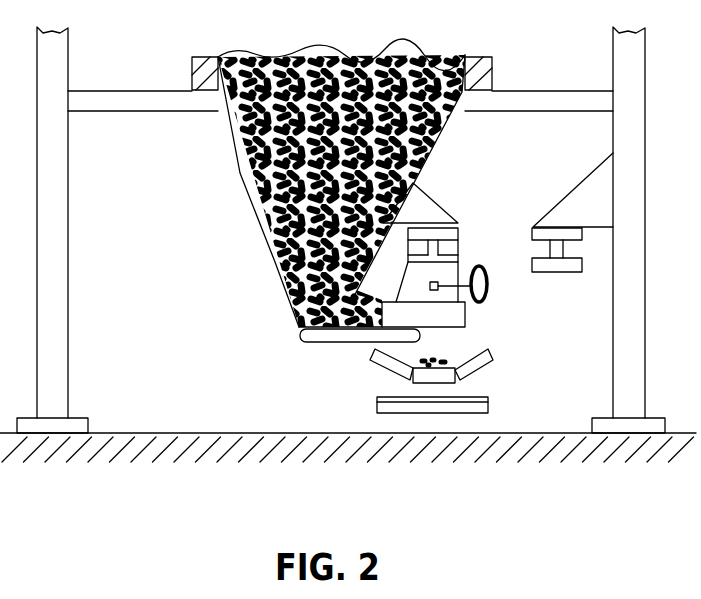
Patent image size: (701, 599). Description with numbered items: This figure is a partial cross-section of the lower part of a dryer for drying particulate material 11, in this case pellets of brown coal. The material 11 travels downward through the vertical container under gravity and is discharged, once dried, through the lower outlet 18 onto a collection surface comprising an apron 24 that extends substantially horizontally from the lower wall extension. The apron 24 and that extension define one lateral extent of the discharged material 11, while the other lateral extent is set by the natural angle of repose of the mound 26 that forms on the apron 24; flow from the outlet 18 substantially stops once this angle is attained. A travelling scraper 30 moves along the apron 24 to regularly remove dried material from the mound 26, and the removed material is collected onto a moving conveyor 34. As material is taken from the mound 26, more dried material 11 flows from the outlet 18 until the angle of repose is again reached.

The particulate material 11 is at (297, 120).
The lower outlet 18 is at (290, 297).
The apron 24 is at (313, 334).
The mound 26 is at (355, 288).
The travelling scraper 30 is at (450, 315).
The moving conveyor 34 is at (452, 362).